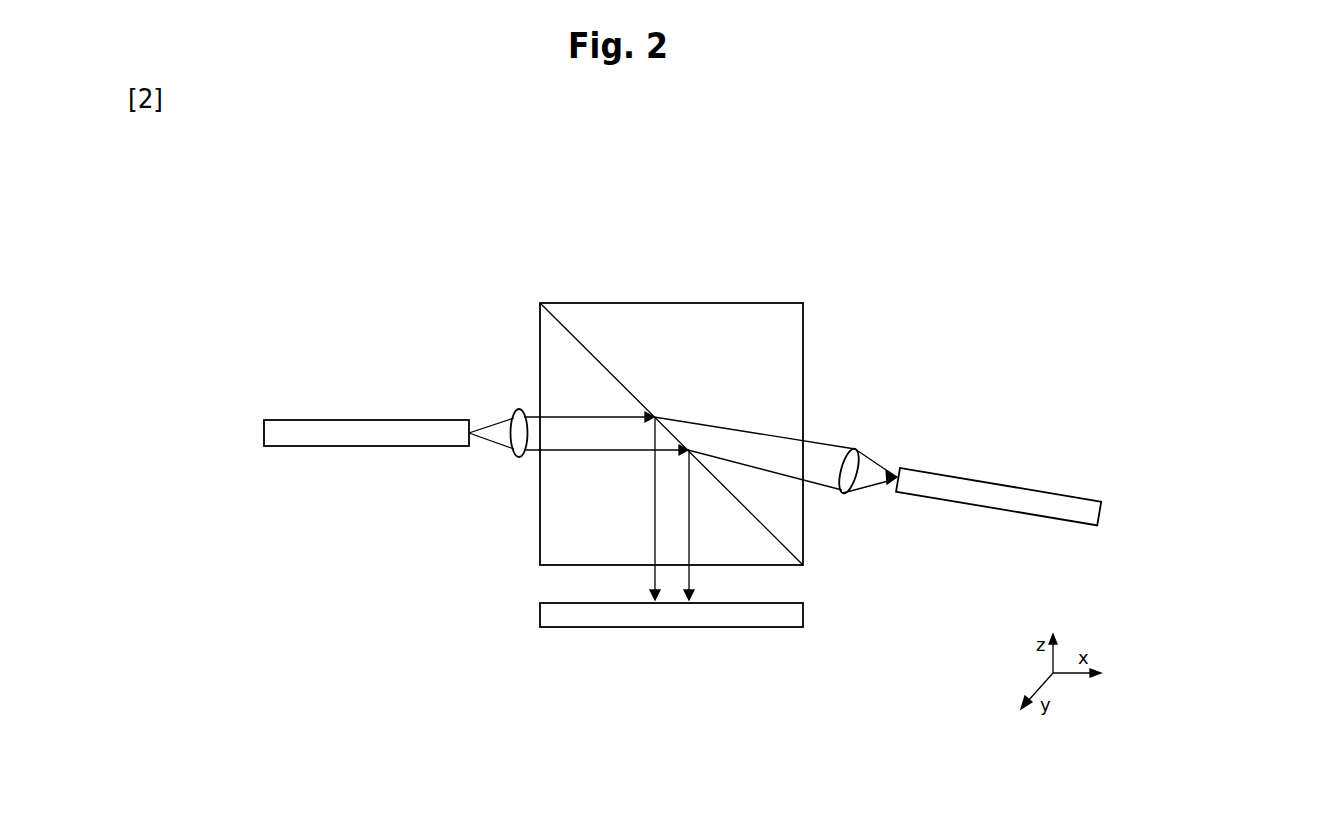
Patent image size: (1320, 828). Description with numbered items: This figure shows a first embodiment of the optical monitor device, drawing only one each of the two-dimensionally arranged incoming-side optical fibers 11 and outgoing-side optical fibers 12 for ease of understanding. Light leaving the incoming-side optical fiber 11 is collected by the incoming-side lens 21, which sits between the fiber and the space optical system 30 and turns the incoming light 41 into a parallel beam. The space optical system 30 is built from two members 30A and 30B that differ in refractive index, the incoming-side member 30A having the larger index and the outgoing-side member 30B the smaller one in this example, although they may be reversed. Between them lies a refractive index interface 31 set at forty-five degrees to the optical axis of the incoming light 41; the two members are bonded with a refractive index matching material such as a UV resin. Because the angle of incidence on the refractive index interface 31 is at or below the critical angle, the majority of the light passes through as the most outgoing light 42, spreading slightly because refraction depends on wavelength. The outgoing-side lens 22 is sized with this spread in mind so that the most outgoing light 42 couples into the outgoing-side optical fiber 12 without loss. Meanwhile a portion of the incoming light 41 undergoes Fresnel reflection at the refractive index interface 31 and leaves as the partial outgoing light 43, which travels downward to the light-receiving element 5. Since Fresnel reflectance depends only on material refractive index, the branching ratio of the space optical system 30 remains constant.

The light-receiving element 5 is at (750, 675).
The incoming-side optical fiber 11 is at (300, 428).
The outgoing-side optical fiber 12 is at (962, 485).
The incoming-side lens 21 is at (519, 427).
The outgoing-side lens 22 is at (855, 450).
The space optical system 30 is at (634, 324).
The incoming-side member 30A is at (594, 544).
The outgoing-side member 30B is at (780, 351).
The refractive index interface 31 is at (633, 394).
The incoming light 41 is at (532, 452).
The most outgoing light 42 is at (828, 491).
The partial outgoing light 43 is at (655, 572).